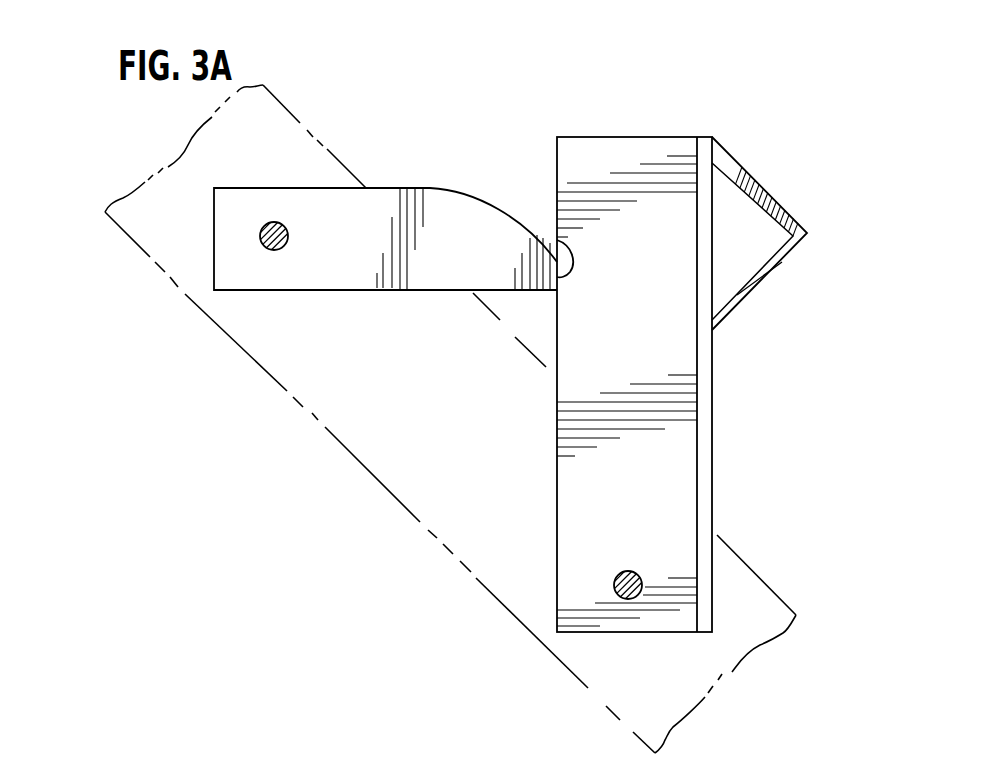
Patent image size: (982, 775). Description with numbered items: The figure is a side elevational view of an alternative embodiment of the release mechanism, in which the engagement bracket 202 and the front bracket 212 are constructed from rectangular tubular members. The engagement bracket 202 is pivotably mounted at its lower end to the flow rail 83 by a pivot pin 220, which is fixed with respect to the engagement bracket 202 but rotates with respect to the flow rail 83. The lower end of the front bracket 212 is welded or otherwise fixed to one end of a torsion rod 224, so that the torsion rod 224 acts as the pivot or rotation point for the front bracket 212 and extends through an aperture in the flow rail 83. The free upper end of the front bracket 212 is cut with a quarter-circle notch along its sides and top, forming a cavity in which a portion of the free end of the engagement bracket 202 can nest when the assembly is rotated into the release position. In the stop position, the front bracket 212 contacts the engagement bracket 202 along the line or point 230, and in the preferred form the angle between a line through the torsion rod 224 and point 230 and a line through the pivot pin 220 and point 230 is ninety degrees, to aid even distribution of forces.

The flow rail 83 is at (622, 685).
The engagement bracket 202 is at (722, 423).
The front bracket 212 is at (383, 187).
The pivot pin 220 is at (614, 582).
The torsion rod 224 is at (261, 240).
The contact point 230 is at (557, 243).